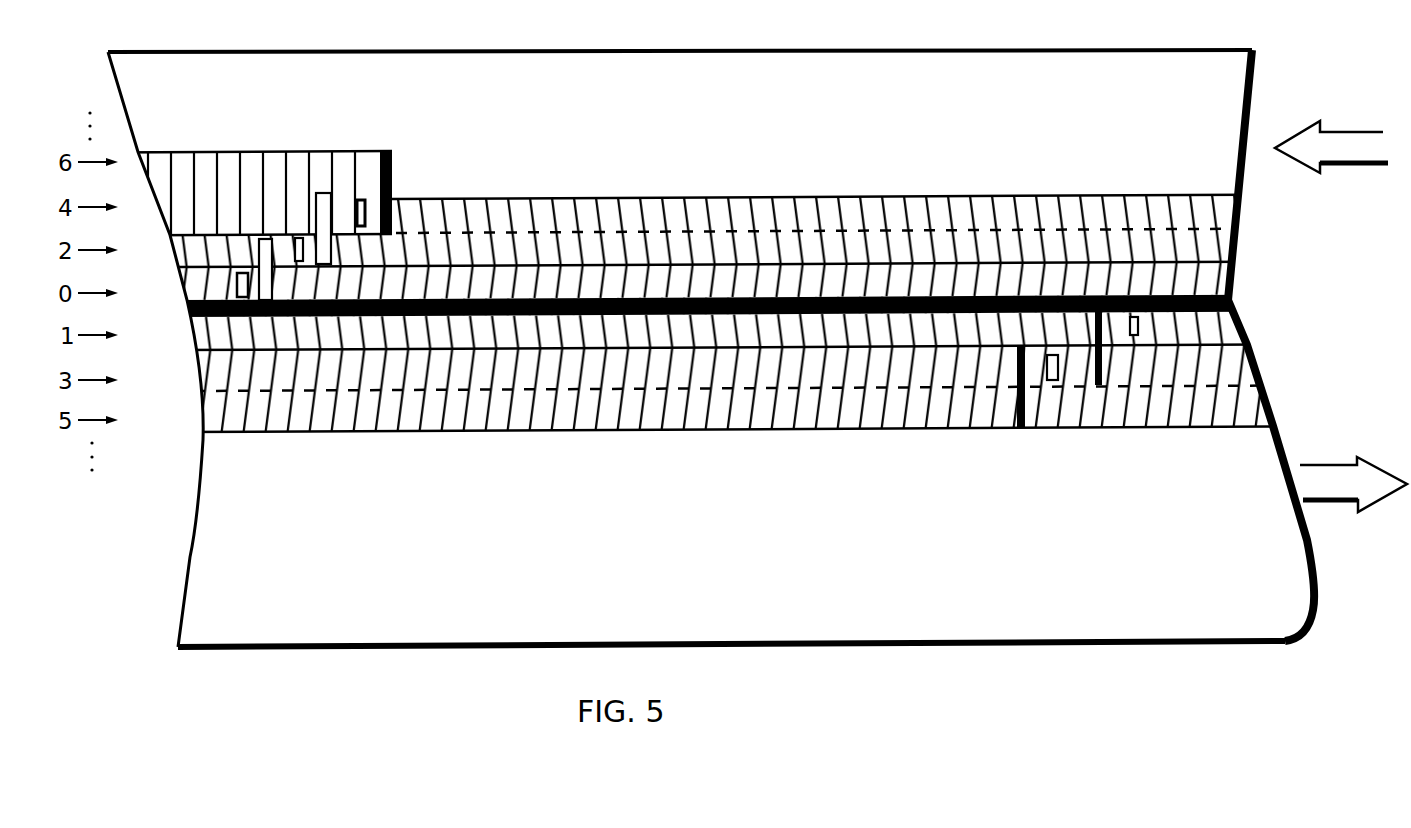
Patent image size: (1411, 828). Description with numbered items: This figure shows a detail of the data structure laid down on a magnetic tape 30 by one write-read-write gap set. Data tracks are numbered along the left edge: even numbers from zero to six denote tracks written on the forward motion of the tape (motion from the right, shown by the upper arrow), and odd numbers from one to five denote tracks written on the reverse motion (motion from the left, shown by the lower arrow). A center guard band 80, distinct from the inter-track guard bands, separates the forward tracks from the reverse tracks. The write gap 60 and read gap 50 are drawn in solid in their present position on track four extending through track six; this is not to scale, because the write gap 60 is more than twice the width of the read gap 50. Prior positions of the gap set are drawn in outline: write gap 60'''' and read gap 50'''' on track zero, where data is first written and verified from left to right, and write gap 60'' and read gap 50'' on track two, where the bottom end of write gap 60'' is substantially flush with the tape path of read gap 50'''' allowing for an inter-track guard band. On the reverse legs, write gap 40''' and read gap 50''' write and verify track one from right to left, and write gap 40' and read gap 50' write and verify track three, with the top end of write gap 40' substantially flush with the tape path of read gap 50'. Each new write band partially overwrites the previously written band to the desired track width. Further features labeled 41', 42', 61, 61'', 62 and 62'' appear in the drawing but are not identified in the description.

The tape 30 is at (409, 555).
The write gap 40' is at (990, 427).
The write gap 40''' is at (1105, 410).
The track line 41' is at (737, 346).
The track region 42' is at (752, 373).
The read gap 50 is at (375, 154).
The read gap 50' is at (1036, 432).
The read gap 50'' is at (288, 172).
The read gap 50''' is at (1165, 413).
The read gap 50'''' is at (193, 190).
The write gap 60 is at (408, 159).
The write gap 60'' is at (337, 173).
The write gap 60'''' is at (236, 191).
The track center line 61 is at (847, 230).
The track boundary line 61'' is at (729, 258).
The track block 62 is at (281, 184).
The track region 62'' is at (729, 243).
The center guard band 80 is at (1246, 300).